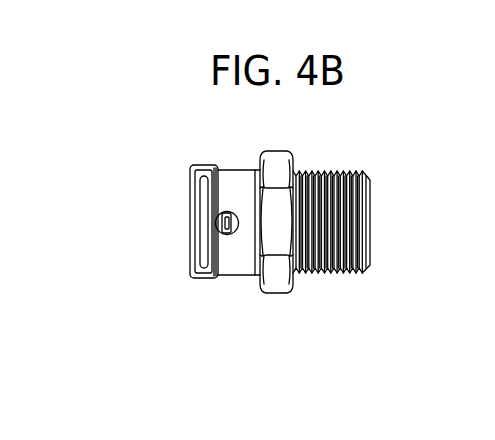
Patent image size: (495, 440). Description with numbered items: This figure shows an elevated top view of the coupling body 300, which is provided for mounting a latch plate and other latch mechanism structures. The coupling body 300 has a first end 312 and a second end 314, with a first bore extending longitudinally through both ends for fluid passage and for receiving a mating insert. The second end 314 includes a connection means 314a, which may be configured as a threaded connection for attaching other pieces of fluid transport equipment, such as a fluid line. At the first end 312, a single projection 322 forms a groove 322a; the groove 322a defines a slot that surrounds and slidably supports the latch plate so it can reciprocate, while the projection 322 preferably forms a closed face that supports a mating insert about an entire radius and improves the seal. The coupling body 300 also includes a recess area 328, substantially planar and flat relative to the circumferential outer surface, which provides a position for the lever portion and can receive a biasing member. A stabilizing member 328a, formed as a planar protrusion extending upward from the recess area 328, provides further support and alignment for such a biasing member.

The coupling body 300 is at (207, 288).
The first end 312 is at (190, 255).
The second end 314 is at (330, 173).
The connection means 314a is at (368, 188).
The projection 322 is at (192, 167).
The groove 322a is at (203, 179).
The recess area 328 is at (222, 221).
The stabilizing member 328a is at (220, 220).